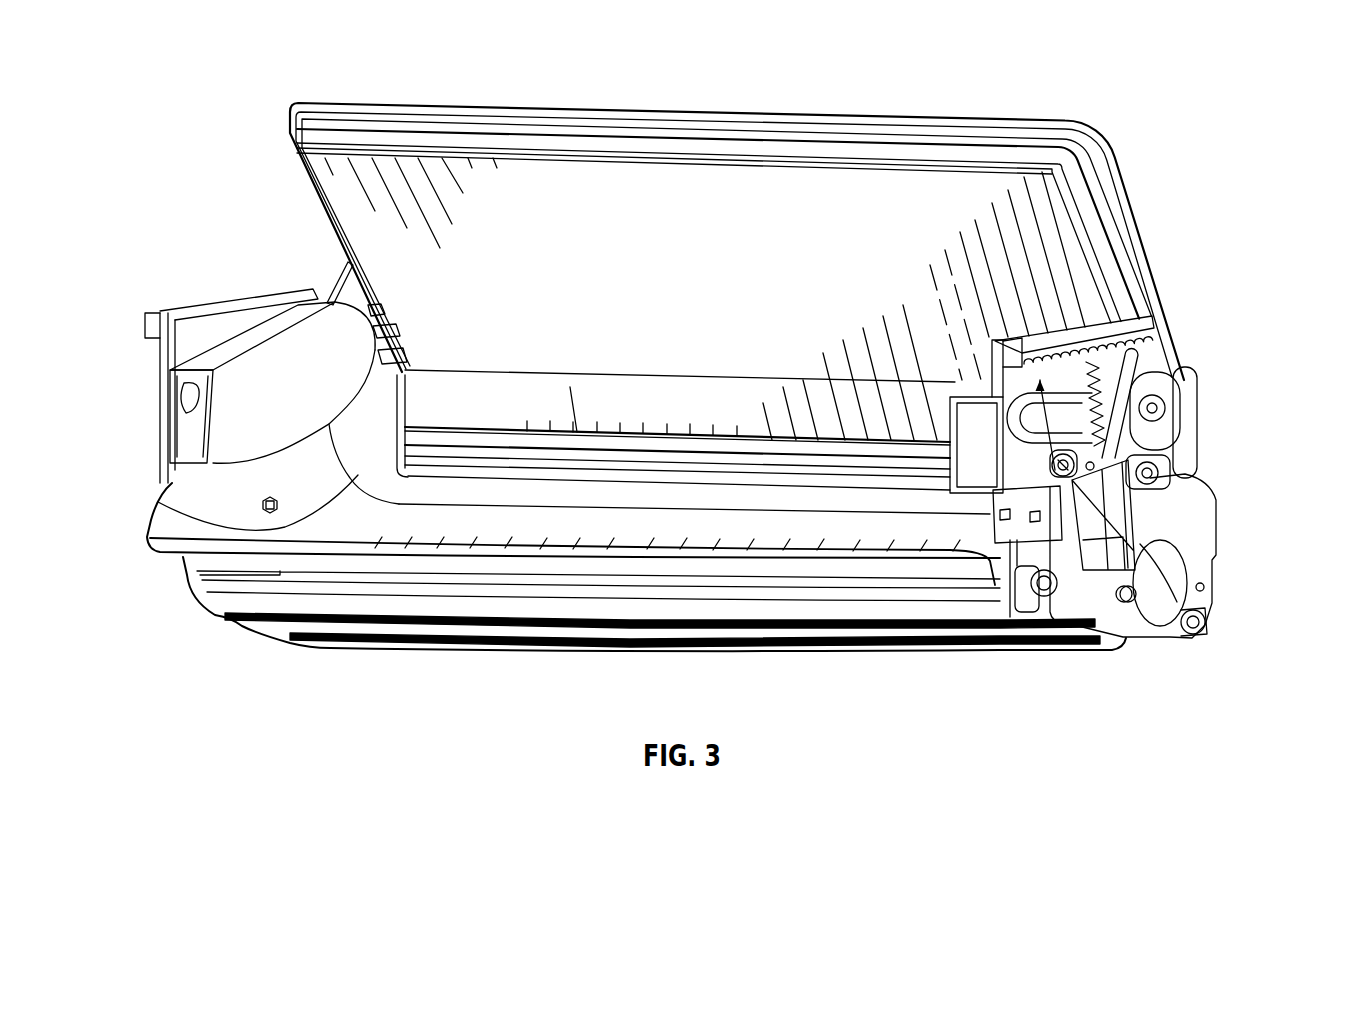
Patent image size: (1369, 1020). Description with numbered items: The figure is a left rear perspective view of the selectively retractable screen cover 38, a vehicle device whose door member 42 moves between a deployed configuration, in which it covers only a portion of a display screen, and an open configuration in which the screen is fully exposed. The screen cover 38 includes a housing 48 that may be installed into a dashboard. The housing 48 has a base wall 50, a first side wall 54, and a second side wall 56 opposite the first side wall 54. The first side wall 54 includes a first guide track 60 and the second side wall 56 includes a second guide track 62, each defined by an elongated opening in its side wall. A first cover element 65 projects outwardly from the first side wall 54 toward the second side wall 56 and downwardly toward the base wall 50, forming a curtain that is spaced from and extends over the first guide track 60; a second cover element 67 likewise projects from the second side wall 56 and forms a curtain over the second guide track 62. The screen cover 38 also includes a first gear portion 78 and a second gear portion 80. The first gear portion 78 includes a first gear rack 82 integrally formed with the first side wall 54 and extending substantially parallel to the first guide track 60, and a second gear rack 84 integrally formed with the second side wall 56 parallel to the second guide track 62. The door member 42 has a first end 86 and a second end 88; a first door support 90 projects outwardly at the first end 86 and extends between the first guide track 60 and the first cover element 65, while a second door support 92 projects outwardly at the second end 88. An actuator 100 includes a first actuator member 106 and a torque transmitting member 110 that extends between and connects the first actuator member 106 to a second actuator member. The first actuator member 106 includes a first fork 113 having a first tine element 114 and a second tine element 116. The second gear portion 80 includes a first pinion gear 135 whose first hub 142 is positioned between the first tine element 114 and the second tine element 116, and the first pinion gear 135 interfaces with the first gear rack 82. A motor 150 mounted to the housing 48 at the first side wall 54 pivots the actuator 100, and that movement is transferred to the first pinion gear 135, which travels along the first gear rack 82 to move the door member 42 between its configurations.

The selectively retractable screen cover 38 is at (222, 152).
The door member 42 is at (349, 193).
The housing 48 is at (140, 531).
The base wall 50 is at (622, 528).
The first side wall 54 is at (1010, 428).
The second side wall 56 is at (200, 497).
The first guide track 60 is at (971, 387).
The second guide track 62 is at (190, 408).
The first cover element 65 is at (1070, 376).
The second cover element 67 is at (244, 338).
The first gear portion 78 is at (1192, 636).
The second gear portion 80 is at (993, 340).
The first gear rack 82 is at (991, 344).
The second gear rack 84 is at (147, 322).
The first end 86 is at (1105, 147).
The second end 88 is at (288, 138).
The first door support 90 is at (1132, 300).
The second door support 92 is at (348, 283).
The actuator 100 is at (360, 652).
The first actuator member 106 is at (988, 556).
The torque transmitting member 110 is at (490, 612).
The first fork 113 is at (1173, 473).
The first tine element 114 is at (1150, 330).
The second tine element 116 is at (1133, 404).
The first pinion gear 135 is at (1088, 420).
The first hub 142 is at (1162, 420).
The motor 150 is at (1198, 546).